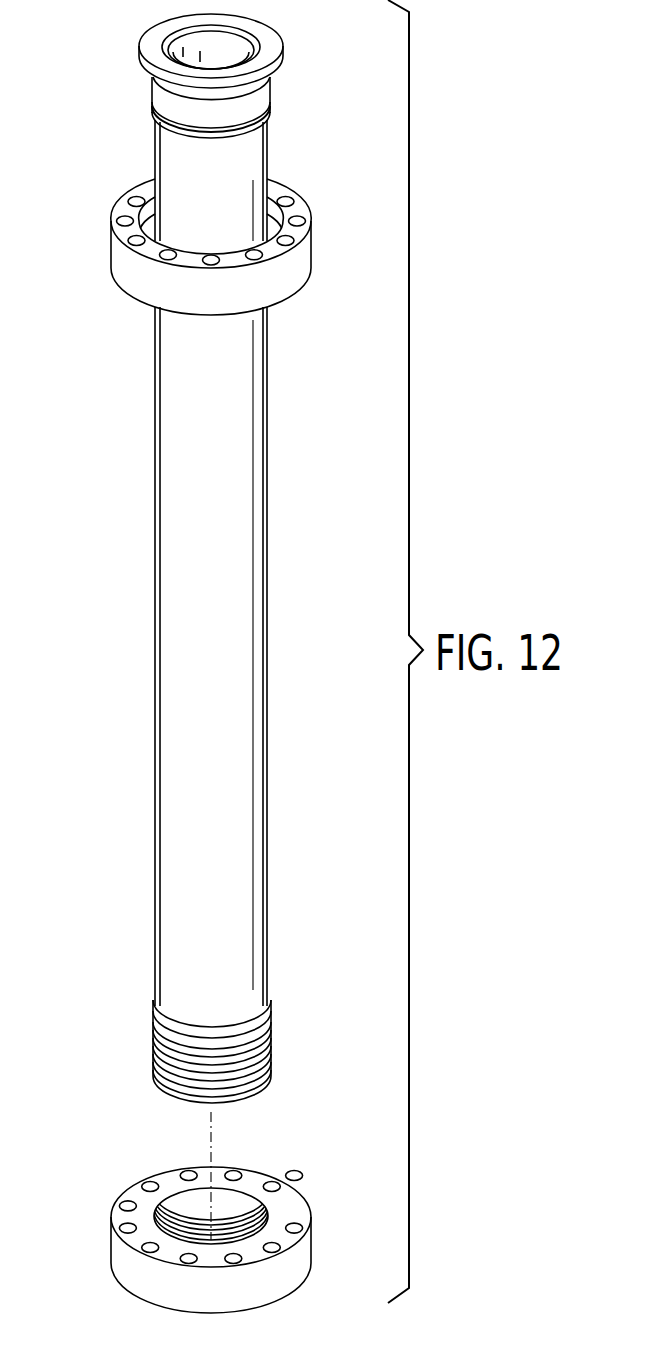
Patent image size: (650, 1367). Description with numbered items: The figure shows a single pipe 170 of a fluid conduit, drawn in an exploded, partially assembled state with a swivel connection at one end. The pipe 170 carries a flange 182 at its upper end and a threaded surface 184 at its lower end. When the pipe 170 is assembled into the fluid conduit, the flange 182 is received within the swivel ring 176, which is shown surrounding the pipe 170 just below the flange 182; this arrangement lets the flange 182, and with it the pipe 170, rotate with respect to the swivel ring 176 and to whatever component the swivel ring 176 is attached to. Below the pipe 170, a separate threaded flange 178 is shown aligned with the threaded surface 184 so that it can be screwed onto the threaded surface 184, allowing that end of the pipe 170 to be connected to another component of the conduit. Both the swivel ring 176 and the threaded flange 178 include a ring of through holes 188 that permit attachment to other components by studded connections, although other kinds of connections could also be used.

The pipe 170 is at (243, 428).
The swivel ring 176 is at (130, 270).
The threaded flange 178 is at (127, 1262).
The flange 182 is at (280, 72).
The threaded surface 184 is at (165, 1068).
The through holes 188 is at (135, 196).